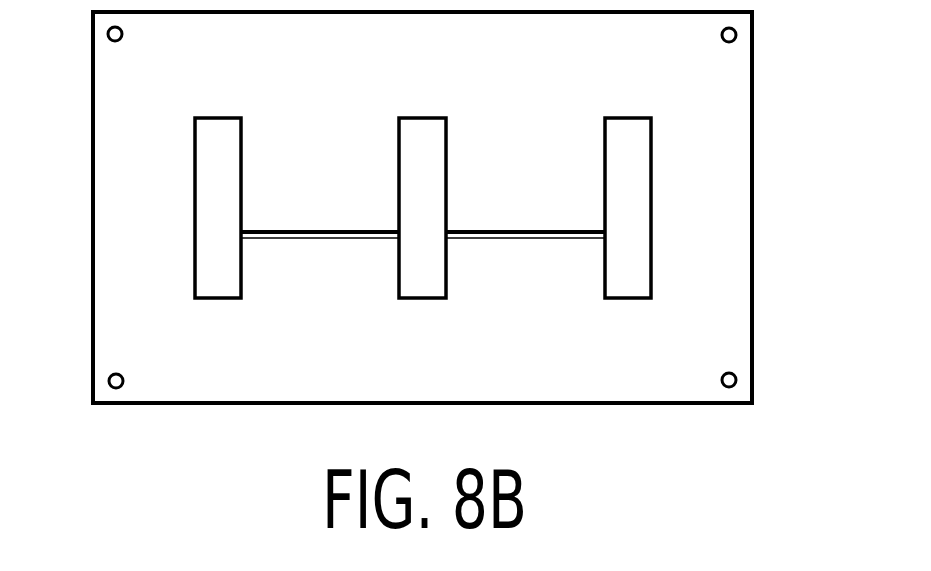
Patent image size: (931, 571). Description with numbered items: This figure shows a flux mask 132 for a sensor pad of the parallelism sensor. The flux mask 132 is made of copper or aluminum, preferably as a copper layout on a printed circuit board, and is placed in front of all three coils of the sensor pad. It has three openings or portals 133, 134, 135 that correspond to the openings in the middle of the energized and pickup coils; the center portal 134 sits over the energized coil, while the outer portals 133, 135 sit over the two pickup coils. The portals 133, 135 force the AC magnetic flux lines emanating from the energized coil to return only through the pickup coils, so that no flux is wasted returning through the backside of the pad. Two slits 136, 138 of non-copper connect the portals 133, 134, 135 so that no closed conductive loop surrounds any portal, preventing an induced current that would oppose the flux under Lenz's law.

The flux mask 132 is at (752, 137).
The portal 133 is at (218, 236).
The portal 134 is at (426, 136).
The portal 135 is at (627, 272).
The slit 136 is at (502, 238).
The slit 138 is at (353, 238).